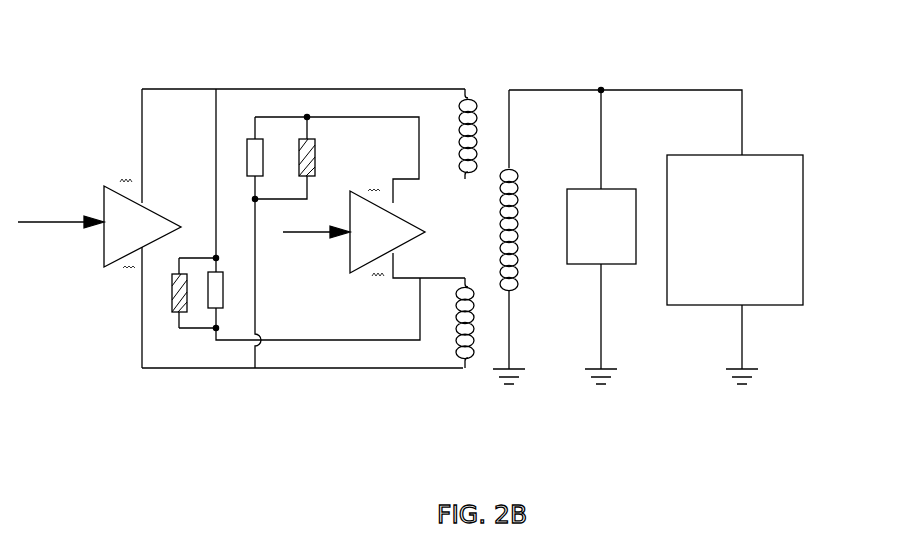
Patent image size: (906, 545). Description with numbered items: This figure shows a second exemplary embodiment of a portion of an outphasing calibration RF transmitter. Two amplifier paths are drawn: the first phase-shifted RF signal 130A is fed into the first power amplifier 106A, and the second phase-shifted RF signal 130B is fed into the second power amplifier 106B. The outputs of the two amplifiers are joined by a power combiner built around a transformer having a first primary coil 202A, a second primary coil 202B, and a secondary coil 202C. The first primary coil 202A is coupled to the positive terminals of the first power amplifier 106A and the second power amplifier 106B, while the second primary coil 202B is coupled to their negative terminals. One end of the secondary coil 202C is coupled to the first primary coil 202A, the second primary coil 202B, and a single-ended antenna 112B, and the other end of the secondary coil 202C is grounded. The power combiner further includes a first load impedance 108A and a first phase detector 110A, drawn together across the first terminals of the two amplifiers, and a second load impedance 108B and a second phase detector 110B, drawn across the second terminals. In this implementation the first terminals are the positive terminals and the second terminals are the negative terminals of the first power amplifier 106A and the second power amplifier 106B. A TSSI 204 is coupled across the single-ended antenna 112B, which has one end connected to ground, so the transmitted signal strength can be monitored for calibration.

The first phase-shifted RF signal 130A is at (56, 222).
The first power amplifier 106A is at (158, 237).
The first load impedance 108A is at (207, 285).
The first phase detector 110A is at (173, 292).
The second load impedance 108B is at (260, 140).
The second phase detector 110B is at (313, 140).
The second power amplifier 106B is at (405, 242).
The second phase-shifted RF signal 130B is at (313, 232).
The first primary coil 202A is at (473, 105).
The second primary coil 202B is at (463, 368).
The secondary coil 202C is at (515, 178).
The TSSI 204 is at (583, 252).
The single-ended antenna 112B is at (708, 284).